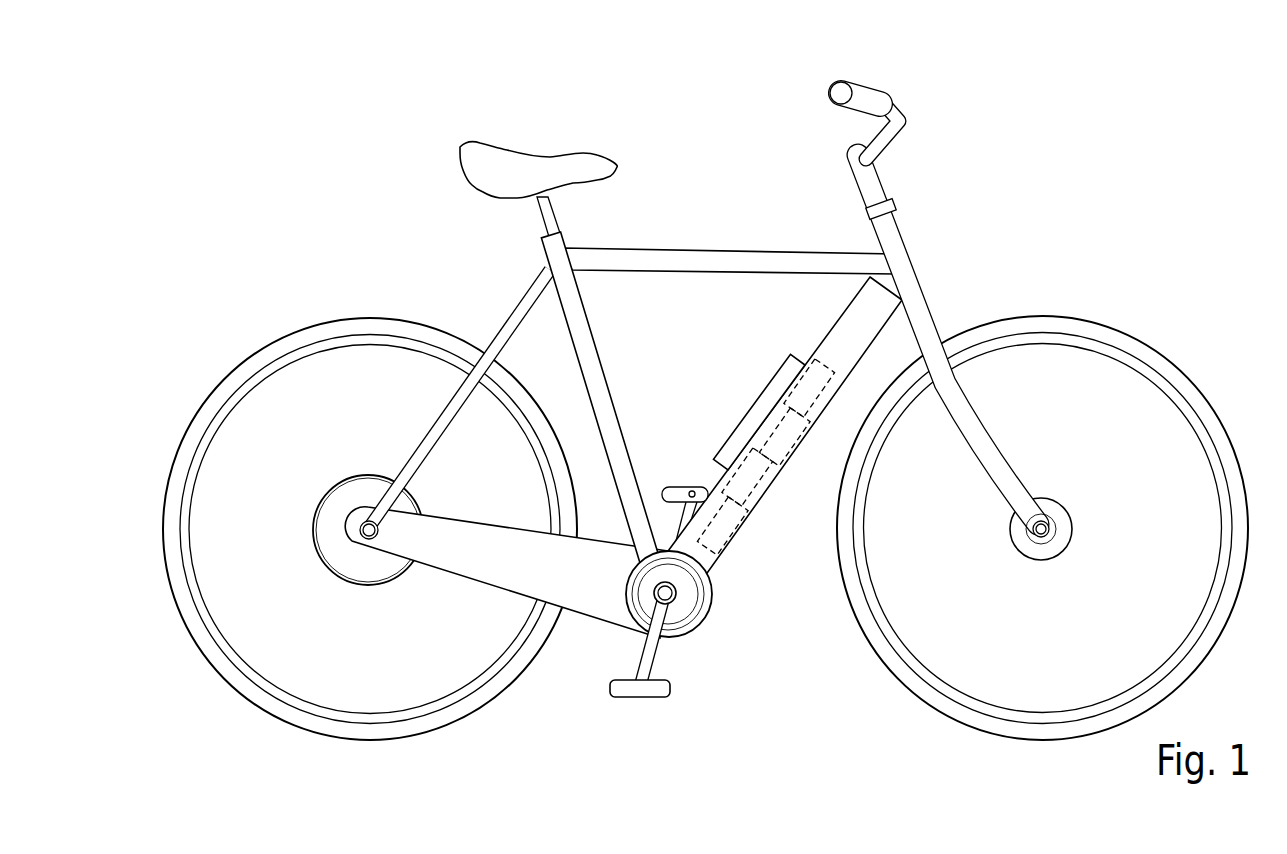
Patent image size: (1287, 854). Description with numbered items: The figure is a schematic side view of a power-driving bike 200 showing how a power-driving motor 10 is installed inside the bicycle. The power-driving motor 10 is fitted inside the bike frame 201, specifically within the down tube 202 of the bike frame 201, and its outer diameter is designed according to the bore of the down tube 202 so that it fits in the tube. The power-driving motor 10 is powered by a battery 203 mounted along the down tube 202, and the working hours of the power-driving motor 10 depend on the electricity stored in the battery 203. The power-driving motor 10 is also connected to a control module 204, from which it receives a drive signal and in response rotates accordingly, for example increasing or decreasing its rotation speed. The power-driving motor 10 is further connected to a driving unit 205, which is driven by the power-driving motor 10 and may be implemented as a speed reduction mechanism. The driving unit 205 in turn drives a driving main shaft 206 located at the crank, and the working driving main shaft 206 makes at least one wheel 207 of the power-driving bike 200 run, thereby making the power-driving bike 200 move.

The power-driving bike 200 is at (705, 411).
The bike frame 201 is at (699, 247).
The down tube 202 is at (878, 305).
The battery 203 is at (752, 392).
The control module 204 is at (795, 365).
The power-driving motor 10 is at (777, 470).
The driving unit 205 is at (727, 547).
The driving main shaft 206 is at (672, 600).
The wheel 207 is at (337, 327).